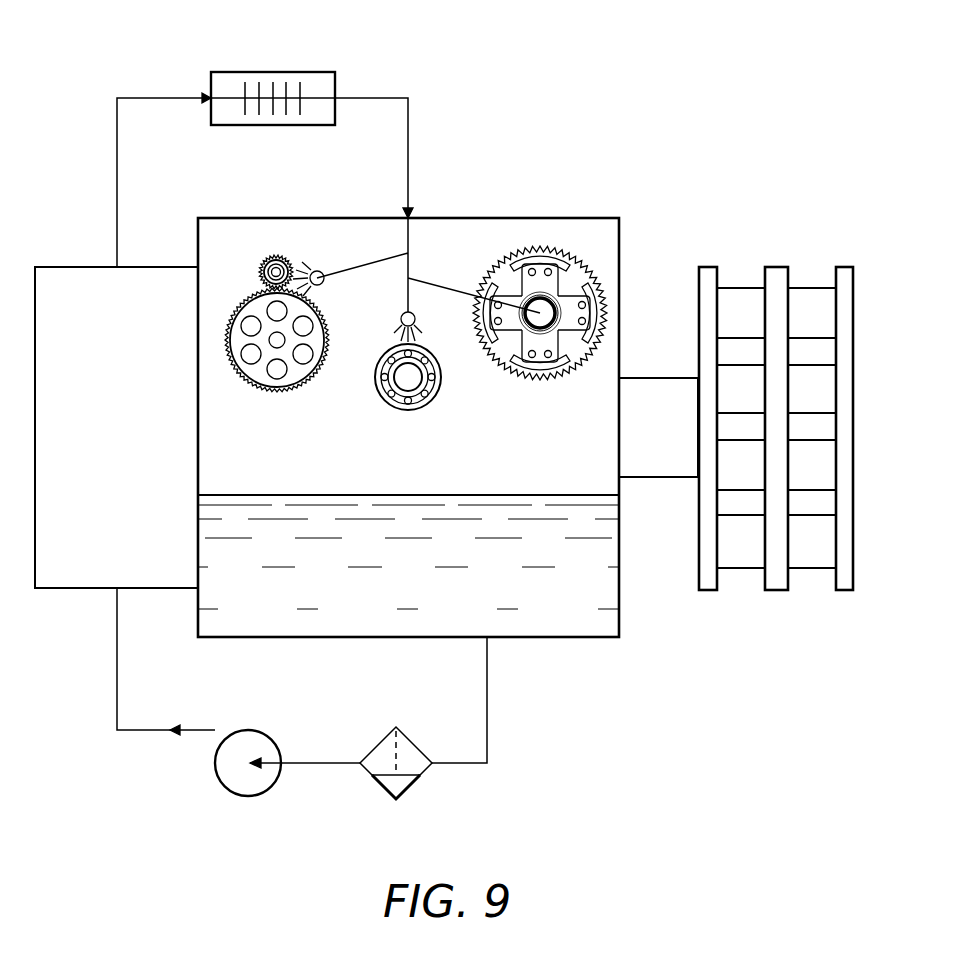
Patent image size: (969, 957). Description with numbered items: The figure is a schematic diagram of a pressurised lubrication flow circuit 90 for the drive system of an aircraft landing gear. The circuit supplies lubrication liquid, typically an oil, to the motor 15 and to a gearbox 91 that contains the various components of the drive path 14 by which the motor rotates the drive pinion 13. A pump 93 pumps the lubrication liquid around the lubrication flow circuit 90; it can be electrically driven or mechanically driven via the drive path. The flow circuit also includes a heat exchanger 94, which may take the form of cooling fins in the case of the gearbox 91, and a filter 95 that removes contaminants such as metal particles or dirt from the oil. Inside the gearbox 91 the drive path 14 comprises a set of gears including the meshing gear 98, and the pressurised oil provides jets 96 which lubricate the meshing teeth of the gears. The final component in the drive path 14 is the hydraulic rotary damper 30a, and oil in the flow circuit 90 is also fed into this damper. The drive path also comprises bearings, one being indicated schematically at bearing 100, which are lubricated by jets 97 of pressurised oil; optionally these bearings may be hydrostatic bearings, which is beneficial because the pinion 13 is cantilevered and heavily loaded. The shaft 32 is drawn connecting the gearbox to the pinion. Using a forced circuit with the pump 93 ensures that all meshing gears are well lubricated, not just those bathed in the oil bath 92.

The drive pinion 13 is at (773, 266).
The drive path 14 is at (603, 252).
The motor 15 is at (55, 266).
The hydraulic rotary damper 30a is at (542, 381).
The shaft 32 is at (660, 478).
The pressurised lubrication flow circuit 90 is at (541, 768).
The gearbox 91 is at (594, 216).
The oil bath 92 is at (597, 624).
The pump 93 is at (247, 797).
The heat exchanger 94 is at (311, 72).
The filter 95 is at (396, 799).
The jets 96 is at (324, 260).
The jets 97 is at (418, 306).
The meshing gear 98 is at (276, 257).
The bearing 100 is at (409, 411).